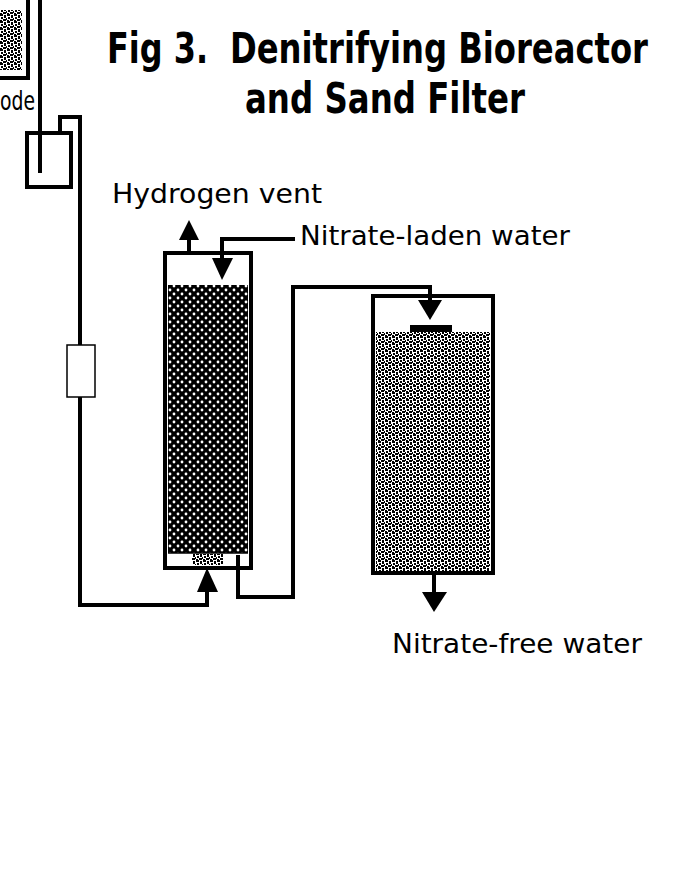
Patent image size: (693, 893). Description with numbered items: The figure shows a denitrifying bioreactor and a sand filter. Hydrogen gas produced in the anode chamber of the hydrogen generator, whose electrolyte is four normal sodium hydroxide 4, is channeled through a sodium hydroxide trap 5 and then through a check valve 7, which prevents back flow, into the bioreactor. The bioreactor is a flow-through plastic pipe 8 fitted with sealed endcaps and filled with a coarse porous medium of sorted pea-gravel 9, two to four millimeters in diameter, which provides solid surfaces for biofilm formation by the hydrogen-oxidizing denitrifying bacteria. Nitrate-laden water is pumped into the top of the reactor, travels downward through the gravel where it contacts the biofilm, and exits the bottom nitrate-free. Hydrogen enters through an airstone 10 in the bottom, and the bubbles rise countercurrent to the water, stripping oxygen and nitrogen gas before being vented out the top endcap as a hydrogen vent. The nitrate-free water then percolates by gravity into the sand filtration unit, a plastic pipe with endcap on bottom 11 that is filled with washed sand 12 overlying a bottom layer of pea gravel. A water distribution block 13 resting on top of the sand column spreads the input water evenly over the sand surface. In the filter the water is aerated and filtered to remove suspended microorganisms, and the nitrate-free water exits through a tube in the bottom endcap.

The sodium hydroxide 4 is at (14, 39).
The sodium hydroxide trap 5 is at (49, 160).
The check valve 7 is at (139, 361).
The flow-through plastic pipe 8 is at (163, 329).
The sorted pea-gravel 9 is at (166, 446).
The airstone 10 is at (170, 553).
The plastic pipe with endcap on bottom 11 is at (497, 371).
The washed sand 12 is at (433, 451).
The water distribution block 13 is at (440, 323).